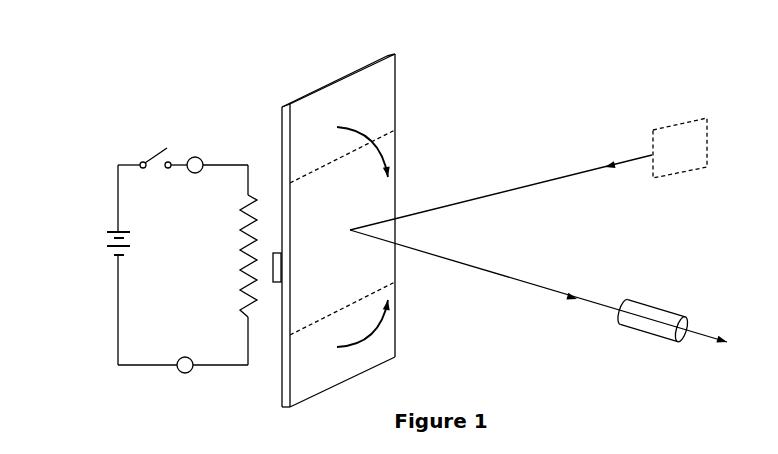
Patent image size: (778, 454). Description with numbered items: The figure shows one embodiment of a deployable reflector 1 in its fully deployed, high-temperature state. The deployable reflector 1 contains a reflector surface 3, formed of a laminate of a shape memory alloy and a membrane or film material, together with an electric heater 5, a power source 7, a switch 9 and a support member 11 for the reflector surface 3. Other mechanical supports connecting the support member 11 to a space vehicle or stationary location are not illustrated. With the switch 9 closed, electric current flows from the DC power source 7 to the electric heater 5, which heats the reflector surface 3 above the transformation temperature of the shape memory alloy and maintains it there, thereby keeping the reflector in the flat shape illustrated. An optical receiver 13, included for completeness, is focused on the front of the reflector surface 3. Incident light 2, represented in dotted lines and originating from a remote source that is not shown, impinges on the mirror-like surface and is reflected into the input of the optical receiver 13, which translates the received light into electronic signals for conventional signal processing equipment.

The deployable reflector 1 is at (252, 108).
The incident light 2 is at (495, 195).
The reflector surface 3 is at (398, 108).
The electric heater 5 is at (272, 245).
The power source 7 is at (103, 242).
The switch 9 is at (160, 152).
The support member 11 is at (277, 283).
The optical receiver 13 is at (667, 310).